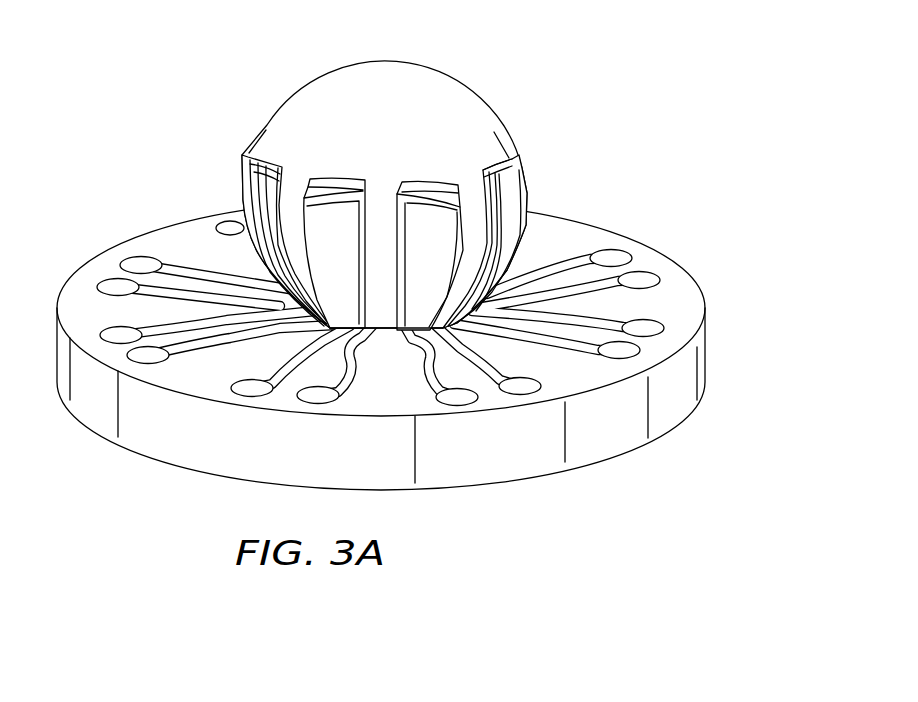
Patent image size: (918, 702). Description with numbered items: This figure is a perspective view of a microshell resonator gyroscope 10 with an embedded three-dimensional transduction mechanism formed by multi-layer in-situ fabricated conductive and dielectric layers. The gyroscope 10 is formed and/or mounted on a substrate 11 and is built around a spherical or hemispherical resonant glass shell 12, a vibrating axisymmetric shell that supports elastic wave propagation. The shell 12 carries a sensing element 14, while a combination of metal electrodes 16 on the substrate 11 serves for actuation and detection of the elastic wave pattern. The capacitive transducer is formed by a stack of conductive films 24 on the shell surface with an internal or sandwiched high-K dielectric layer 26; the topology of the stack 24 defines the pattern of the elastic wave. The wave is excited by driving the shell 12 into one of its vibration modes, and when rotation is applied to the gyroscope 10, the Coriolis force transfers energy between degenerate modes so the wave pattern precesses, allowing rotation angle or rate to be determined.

The microshell resonator gyroscope 10 is at (418, 277).
The substrate 11 is at (668, 262).
The resonant shell 12 is at (418, 80).
The sensing element 14 is at (351, 182).
The metal electrodes 16 is at (617, 350).
The stack of conductive films 24 is at (505, 187).
The high-K dielectric layer 26 is at (514, 180).